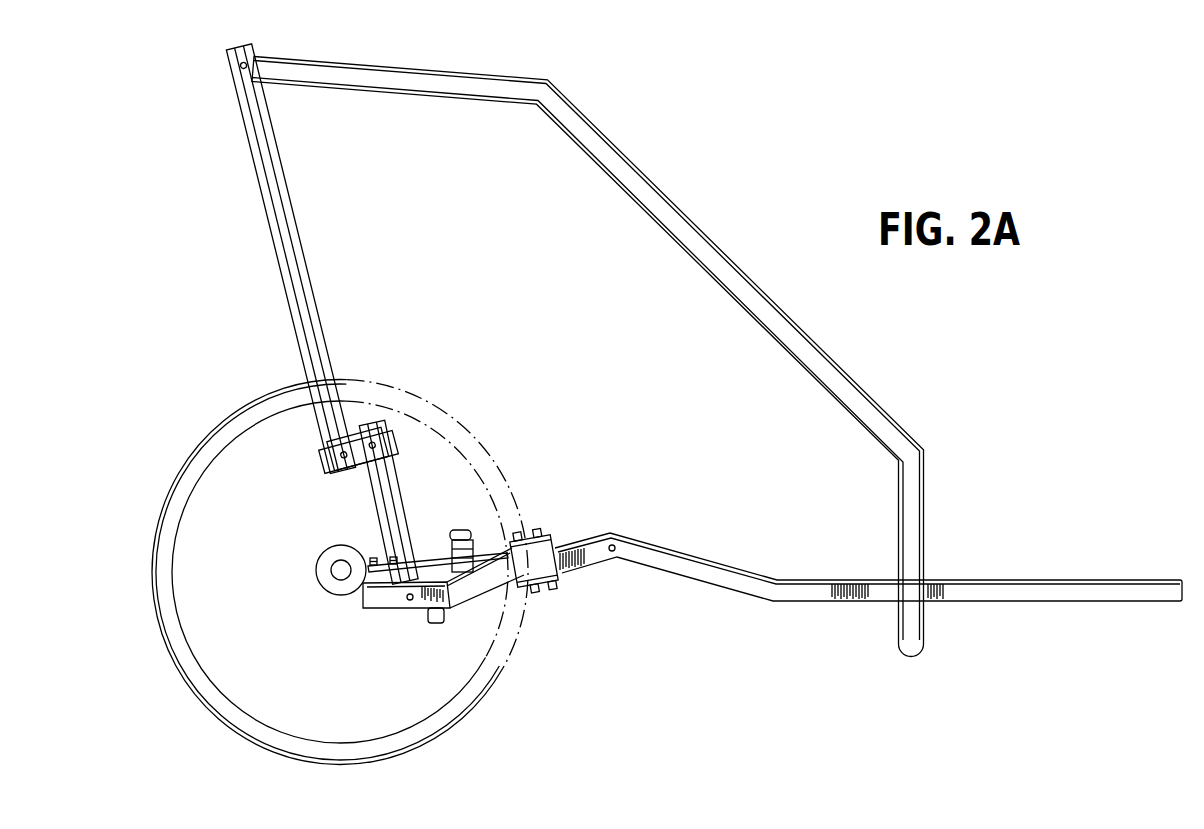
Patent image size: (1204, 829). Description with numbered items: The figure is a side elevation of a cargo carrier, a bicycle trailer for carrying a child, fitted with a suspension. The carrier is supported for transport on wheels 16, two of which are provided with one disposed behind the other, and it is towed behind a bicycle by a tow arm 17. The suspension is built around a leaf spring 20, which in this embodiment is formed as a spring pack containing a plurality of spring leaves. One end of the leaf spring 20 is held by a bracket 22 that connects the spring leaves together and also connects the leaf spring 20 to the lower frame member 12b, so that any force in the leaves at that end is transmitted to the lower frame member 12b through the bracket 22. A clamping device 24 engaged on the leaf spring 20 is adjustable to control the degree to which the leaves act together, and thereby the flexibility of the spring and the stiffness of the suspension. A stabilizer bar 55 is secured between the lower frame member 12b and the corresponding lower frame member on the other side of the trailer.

The wheels 16 is at (248, 405).
The leaf spring 20 is at (492, 545).
The bracket 22 is at (550, 563).
The clamping device 24 is at (457, 530).
The stabilizer bar 55 is at (428, 619).
The lower frame member 12b is at (690, 568).
The tow arm 17 is at (1062, 587).